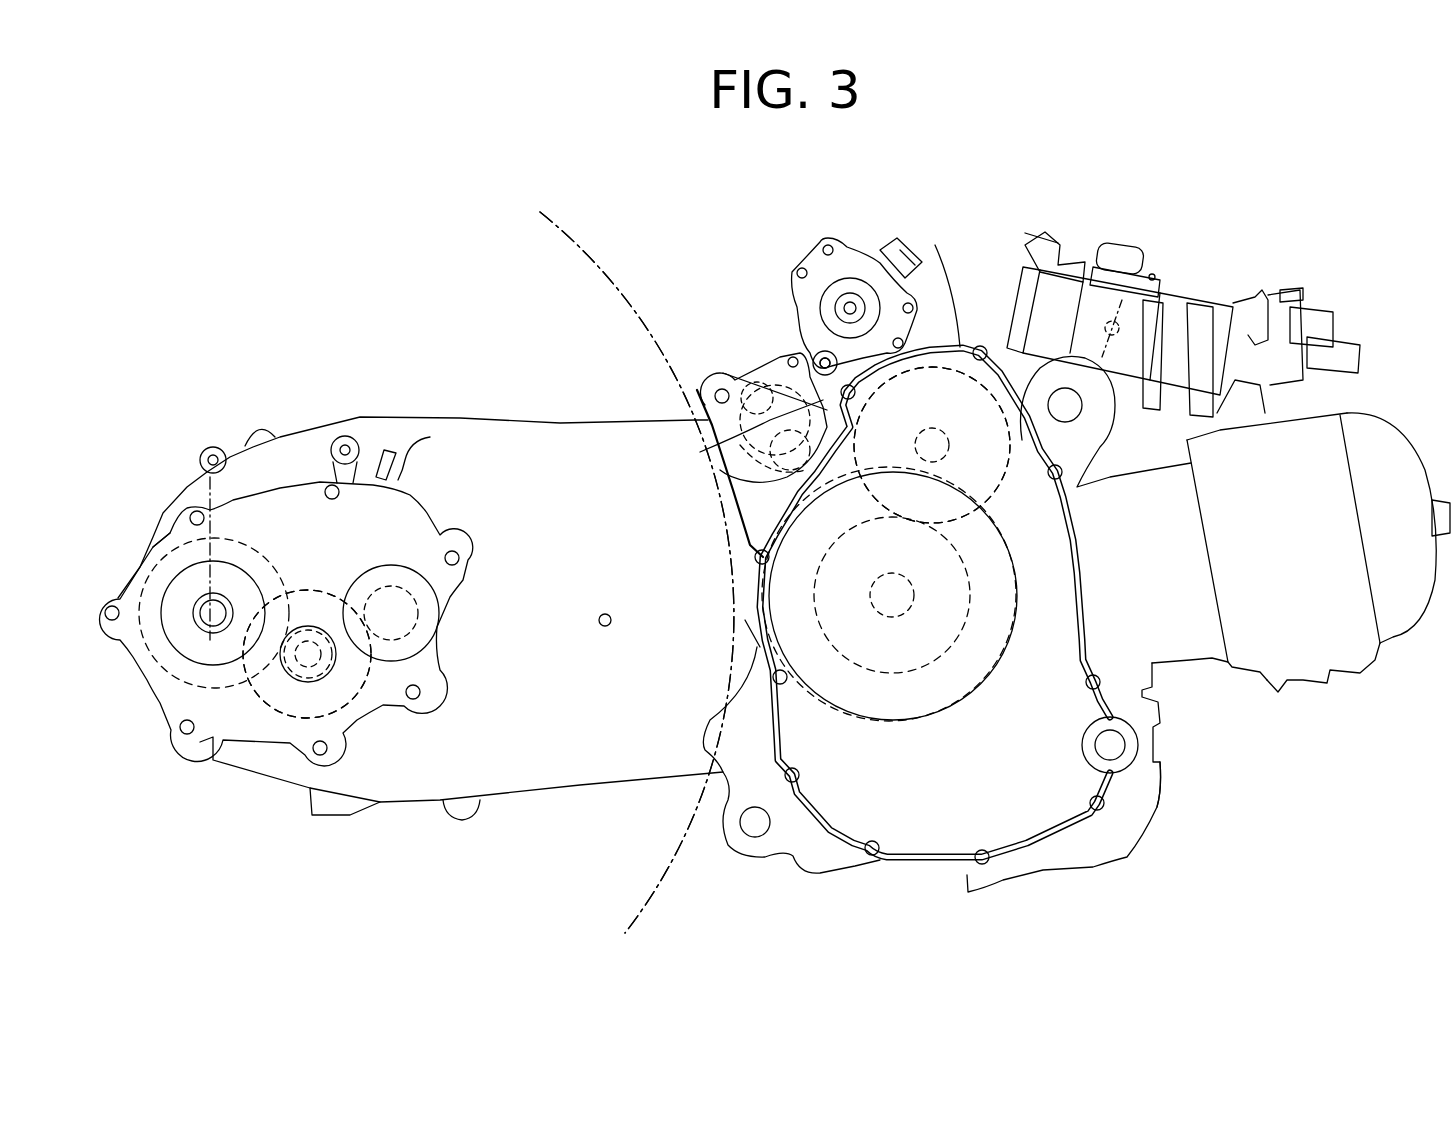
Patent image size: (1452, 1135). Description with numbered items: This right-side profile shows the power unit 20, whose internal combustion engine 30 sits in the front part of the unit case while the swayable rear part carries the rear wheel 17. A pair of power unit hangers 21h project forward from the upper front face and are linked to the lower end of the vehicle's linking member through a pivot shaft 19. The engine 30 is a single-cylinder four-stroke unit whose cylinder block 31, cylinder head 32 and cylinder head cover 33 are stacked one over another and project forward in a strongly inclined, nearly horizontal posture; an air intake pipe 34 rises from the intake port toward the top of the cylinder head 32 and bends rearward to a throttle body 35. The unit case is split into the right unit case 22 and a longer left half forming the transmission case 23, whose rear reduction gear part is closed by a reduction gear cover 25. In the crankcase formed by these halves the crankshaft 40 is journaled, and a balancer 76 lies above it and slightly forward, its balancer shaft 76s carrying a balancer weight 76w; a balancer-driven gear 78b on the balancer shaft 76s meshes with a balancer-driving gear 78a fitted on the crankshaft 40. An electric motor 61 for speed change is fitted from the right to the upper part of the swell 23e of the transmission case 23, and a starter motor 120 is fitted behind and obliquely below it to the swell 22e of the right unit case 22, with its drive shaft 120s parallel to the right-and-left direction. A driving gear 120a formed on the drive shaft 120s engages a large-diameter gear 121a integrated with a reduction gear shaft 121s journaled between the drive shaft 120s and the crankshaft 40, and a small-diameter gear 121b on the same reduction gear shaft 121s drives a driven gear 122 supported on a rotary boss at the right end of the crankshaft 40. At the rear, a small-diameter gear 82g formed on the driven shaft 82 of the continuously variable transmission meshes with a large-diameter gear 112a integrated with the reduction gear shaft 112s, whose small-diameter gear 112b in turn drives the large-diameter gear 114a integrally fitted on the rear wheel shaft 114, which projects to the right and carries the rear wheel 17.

The rear wheel 17 is at (672, 885).
The pivot shaft 19 is at (1070, 407).
The power unit 20 is at (613, 268).
The power unit hanger 21h is at (1103, 443).
The right unit case 22 is at (905, 867).
The swell 22e is at (700, 388).
The transmission case 23 is at (567, 785).
The swell 23e is at (937, 250).
The reduction gear cover 25 is at (285, 520).
The internal combustion engine 30 is at (1175, 774).
The cylinder block 31 is at (1190, 662).
The cylinder head 32 is at (1307, 683).
The cylinder head cover 33 is at (1400, 640).
The air intake pipe 34 is at (1250, 373).
The throttle body 35 is at (1103, 298).
The crankshaft 40 is at (898, 617).
The electric motor for speed change 61 is at (858, 240).
The balancer 76 is at (1007, 353).
The balancer shaft 76s is at (933, 430).
The balancer weight 76w is at (990, 463).
The balancer-driving gear 78a is at (968, 620).
The balancer-driven gear 78b is at (995, 480).
The driven shaft 82 is at (408, 588).
The small-diameter gear 82g is at (410, 632).
The large-diameter gear 112a is at (357, 700).
The small-diameter gear 112b is at (307, 683).
The reduction gear shaft 112s is at (313, 643).
The rear wheel shaft 114 is at (205, 602).
The large-diameter gear 114a is at (166, 666).
The starter motor 120 is at (737, 370).
The driving gear 120a is at (708, 450).
The drive shaft 120s is at (757, 398).
The large-diameter gear 121a is at (717, 518).
The small-diameter gear 121b is at (750, 543).
The reduction gear shaft 121s is at (718, 488).
The driven gear 122 is at (760, 647).